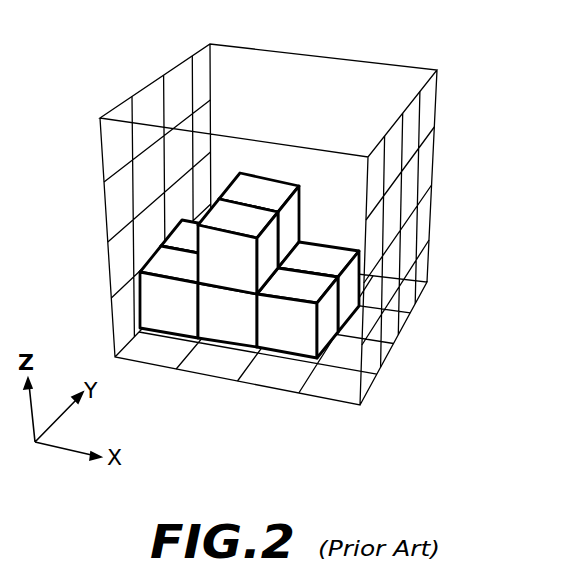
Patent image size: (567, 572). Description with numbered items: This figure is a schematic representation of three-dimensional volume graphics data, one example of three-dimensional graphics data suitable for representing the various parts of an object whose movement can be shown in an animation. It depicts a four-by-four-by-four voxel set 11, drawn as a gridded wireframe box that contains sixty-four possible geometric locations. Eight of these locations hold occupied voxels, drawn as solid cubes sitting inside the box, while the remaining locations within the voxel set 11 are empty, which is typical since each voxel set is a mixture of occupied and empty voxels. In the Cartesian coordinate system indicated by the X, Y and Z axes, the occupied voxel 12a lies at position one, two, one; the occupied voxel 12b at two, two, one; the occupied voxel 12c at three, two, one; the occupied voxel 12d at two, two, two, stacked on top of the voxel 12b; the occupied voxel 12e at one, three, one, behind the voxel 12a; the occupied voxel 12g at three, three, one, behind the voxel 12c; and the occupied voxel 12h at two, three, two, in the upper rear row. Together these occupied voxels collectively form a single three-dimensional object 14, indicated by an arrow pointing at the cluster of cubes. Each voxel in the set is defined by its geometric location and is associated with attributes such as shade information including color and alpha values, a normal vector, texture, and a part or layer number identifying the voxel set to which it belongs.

The voxel set 11 is at (466, 72).
The occupied voxel 12a is at (180, 318).
The occupied voxel 12b is at (232, 330).
The occupied voxel 12c is at (289, 333).
The occupied voxel 12d is at (265, 267).
The occupied voxel 12e is at (189, 234).
The occupied voxel 12g is at (347, 286).
The occupied voxel 12h is at (292, 228).
The 3D object 14 is at (290, 213).